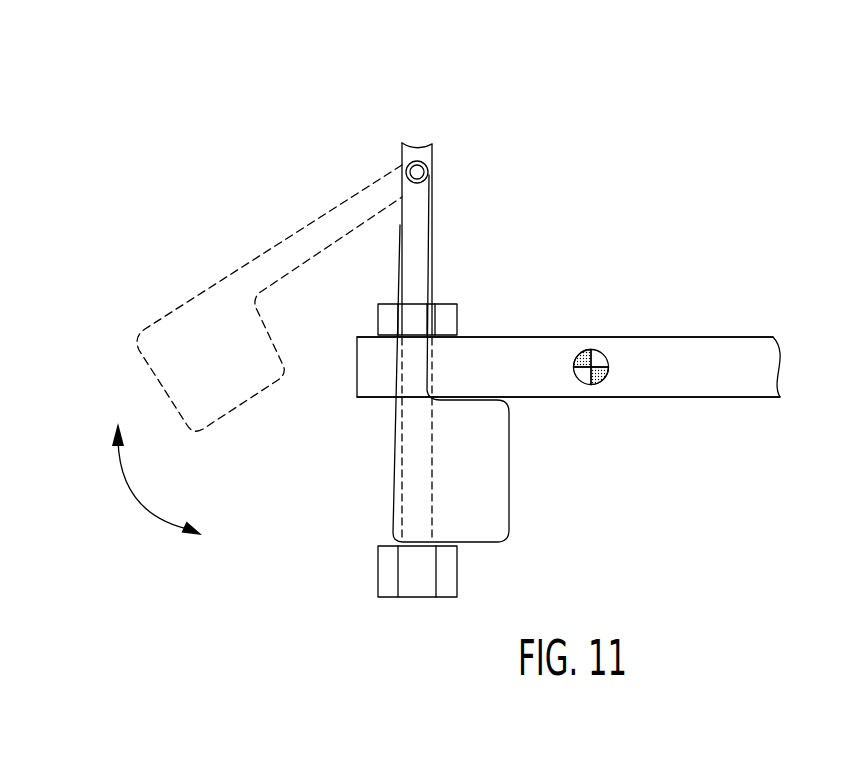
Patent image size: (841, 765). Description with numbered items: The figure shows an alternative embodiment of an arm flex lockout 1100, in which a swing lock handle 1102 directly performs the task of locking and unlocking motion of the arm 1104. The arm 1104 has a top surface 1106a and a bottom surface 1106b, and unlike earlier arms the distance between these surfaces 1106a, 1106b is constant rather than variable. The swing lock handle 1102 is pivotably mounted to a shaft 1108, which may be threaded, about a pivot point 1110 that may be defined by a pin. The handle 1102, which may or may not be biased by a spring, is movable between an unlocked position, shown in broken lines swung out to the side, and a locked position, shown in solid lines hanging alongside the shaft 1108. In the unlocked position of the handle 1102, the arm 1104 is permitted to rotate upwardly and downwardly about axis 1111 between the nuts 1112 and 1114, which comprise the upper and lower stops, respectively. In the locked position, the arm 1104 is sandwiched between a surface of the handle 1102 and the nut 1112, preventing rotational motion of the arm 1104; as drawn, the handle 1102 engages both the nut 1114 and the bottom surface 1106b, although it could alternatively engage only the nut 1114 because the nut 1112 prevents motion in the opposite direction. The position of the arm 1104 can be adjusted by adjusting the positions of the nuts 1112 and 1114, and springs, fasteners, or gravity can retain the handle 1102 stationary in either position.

The lockout 1100 is at (615, 190).
The swing lock handle 1102 is at (510, 474).
The arm 1104 is at (697, 356).
The top surface 1106a is at (532, 336).
The bottom surface 1106b is at (647, 398).
The shaft 1108 is at (432, 206).
The pivot point 1110 is at (416, 172).
The axis 1111 is at (582, 354).
The nut 1112 is at (447, 303).
The nut 1114 is at (392, 598).